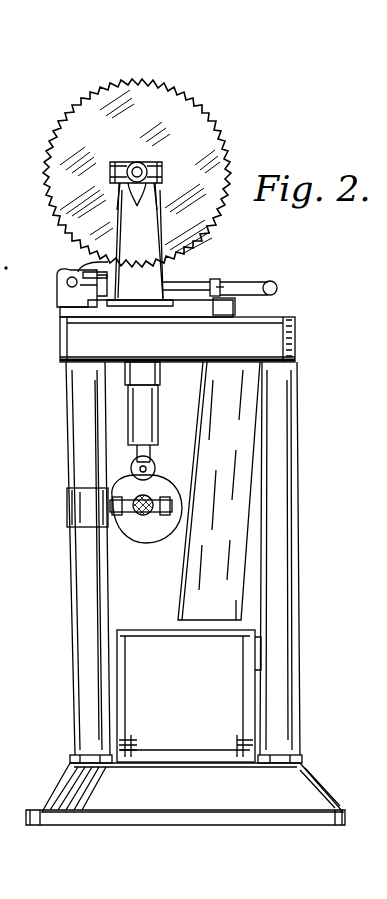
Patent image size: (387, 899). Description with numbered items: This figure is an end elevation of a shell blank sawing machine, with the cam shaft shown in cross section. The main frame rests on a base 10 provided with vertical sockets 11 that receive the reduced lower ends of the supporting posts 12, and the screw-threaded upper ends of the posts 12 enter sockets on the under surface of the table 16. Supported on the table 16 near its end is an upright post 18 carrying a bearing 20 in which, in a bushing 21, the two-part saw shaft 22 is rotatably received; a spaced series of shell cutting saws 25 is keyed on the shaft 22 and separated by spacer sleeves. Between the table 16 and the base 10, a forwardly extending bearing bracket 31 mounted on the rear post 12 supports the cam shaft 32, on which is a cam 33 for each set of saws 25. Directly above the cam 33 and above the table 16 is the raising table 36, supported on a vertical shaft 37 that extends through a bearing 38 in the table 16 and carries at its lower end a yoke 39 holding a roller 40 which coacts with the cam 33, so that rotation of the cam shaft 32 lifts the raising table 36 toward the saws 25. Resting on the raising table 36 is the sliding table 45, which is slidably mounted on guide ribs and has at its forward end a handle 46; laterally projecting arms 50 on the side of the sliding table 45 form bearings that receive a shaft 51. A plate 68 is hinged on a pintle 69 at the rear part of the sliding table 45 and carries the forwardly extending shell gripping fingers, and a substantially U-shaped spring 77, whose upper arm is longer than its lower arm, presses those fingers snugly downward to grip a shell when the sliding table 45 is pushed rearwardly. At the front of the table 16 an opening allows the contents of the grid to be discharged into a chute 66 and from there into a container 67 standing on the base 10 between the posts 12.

The base 10 is at (185, 794).
The vertical sockets 11 is at (298, 758).
The supporting posts 12 is at (282, 702).
The table 16 is at (177, 339).
The upright posts 18 is at (123, 280).
The bearings 20 is at (148, 166).
The bushings 21 is at (121, 188).
The saw shaft 22 is at (158, 177).
The shell cutting saws 25 is at (137, 173).
The bearing brackets 31 is at (75, 512).
The cam shaft 32 is at (143, 517).
The cam 33 is at (170, 480).
The raising table 36 is at (242, 308).
The vertical shaft 37 is at (147, 428).
The bearing 38 is at (158, 378).
The yoke 39 is at (145, 455).
The roller 40 is at (158, 467).
The sliding table 45 is at (197, 292).
The handle 46 is at (276, 285).
The laterally projecting arms 50 is at (218, 285).
The shaft 51 is at (175, 285).
The chute 66 is at (219, 491).
The container 67 is at (189, 696).
The plate 68 is at (83, 271).
The pintle 69 is at (65, 270).
The U-shaped spring 77 is at (98, 261).